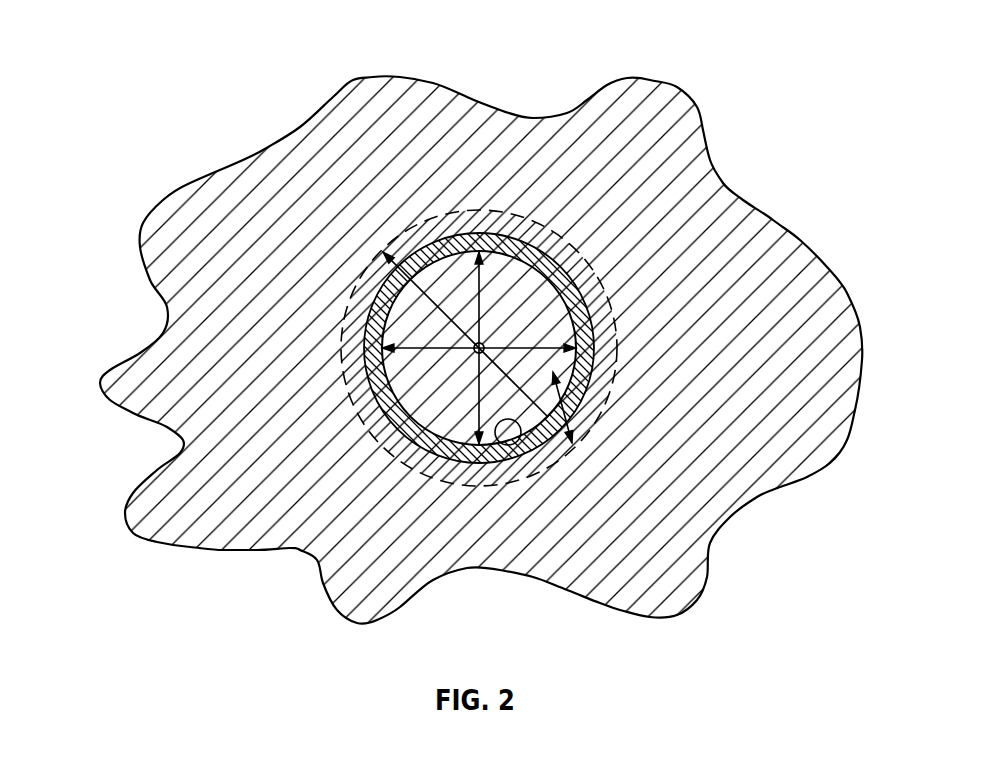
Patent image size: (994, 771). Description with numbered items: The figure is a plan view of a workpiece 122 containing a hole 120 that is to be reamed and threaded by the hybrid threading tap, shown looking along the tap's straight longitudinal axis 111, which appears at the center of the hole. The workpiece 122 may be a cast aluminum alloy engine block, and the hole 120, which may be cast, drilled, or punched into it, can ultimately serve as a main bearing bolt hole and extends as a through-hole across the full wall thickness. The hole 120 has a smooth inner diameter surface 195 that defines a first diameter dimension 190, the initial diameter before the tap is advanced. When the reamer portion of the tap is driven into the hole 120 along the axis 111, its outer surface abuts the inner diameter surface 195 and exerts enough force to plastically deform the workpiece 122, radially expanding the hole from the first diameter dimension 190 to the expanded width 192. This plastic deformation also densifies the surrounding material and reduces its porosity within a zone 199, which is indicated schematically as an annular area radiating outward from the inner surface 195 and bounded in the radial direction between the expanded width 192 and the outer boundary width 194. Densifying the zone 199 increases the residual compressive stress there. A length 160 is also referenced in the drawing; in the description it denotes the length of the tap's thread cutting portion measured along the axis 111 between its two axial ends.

The longitudinal axis 111 is at (482, 343).
The hole 120 is at (555, 405).
The workpiece 122 is at (797, 348).
The length 160 is at (499, 450).
The first diameter dimension 190 is at (478, 371).
The expanded width 192 is at (547, 343).
The outer boundary width 194 is at (450, 255).
The inner diameter surface 195 is at (360, 434).
The zone 199 is at (456, 212).